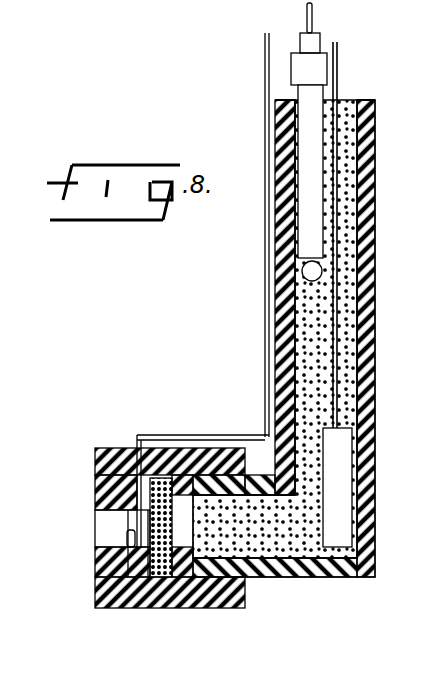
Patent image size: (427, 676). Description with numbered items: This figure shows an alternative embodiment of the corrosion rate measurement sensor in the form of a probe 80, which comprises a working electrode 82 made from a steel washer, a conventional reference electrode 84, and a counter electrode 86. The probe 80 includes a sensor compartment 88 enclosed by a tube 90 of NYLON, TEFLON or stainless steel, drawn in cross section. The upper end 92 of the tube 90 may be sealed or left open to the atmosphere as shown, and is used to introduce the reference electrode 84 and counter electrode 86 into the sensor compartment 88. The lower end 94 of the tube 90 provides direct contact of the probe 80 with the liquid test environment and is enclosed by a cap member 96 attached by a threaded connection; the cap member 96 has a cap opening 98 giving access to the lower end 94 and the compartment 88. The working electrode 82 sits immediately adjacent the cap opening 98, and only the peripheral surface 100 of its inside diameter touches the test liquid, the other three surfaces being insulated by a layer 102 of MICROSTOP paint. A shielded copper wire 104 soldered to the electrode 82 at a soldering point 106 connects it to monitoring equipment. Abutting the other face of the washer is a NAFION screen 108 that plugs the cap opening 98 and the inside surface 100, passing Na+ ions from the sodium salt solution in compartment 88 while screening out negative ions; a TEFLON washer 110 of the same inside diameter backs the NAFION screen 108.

The probe 80 is at (238, 303).
The working electrode 82 is at (133, 606).
The reference electrode 84 is at (293, 70).
The counter electrode 86 is at (342, 487).
The sensor compartment 88 is at (348, 341).
The tube 90 is at (376, 232).
The upper end 92 is at (368, 100).
The lower end 94 is at (205, 602).
The cap member 96 is at (102, 573).
The cap opening 98 is at (97, 518).
The peripheral surface 100 is at (127, 535).
The layer of MICROSTOP paint 102 is at (98, 600).
The shielded copper wire 104 is at (266, 355).
The soldering point 106 is at (130, 493).
The NAFION screen 108 is at (153, 606).
The TEFLON washer 110 is at (190, 487).